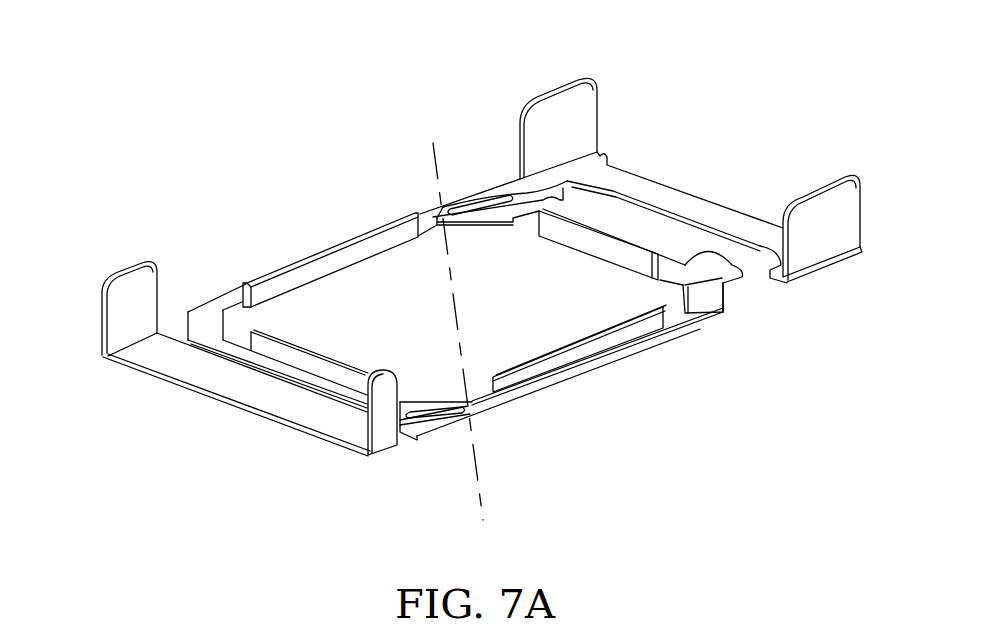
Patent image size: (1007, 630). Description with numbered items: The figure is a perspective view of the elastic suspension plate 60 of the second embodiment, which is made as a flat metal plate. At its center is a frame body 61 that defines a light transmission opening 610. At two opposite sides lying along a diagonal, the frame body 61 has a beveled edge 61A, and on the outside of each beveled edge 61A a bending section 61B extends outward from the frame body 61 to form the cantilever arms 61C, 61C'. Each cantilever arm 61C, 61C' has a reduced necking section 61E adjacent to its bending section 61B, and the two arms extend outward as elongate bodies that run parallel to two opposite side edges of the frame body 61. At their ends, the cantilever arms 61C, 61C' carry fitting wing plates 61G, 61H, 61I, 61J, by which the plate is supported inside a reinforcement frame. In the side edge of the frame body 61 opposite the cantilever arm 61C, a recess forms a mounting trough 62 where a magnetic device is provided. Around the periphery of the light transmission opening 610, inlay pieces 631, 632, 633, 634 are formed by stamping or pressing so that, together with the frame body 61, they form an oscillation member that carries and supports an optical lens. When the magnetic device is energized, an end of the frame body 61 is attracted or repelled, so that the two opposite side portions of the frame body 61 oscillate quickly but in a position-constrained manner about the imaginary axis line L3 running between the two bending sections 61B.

The elastic suspension plate 60 is at (343, 190).
The frame body 61 is at (667, 328).
The beveled edge 61A is at (488, 213).
The bending section 61B is at (438, 222).
The cantilever arm 61C is at (653, 189).
The cantilever arm 61C' is at (217, 394).
The reduced necking section 61E is at (490, 187).
The fitting wing plate 61G is at (820, 203).
The fitting wing plate 61H is at (553, 103).
The fitting wing plate 61I is at (378, 400).
The fitting wing plate 61J is at (118, 273).
The mounting trough 62 is at (727, 267).
The light transmission opening 610 is at (620, 290).
The inlay piece 631 is at (333, 265).
The inlay piece 632 is at (610, 255).
The inlay piece 633 is at (577, 347).
The inlay piece 634 is at (300, 357).
The imaginary axis line L3 is at (477, 477).